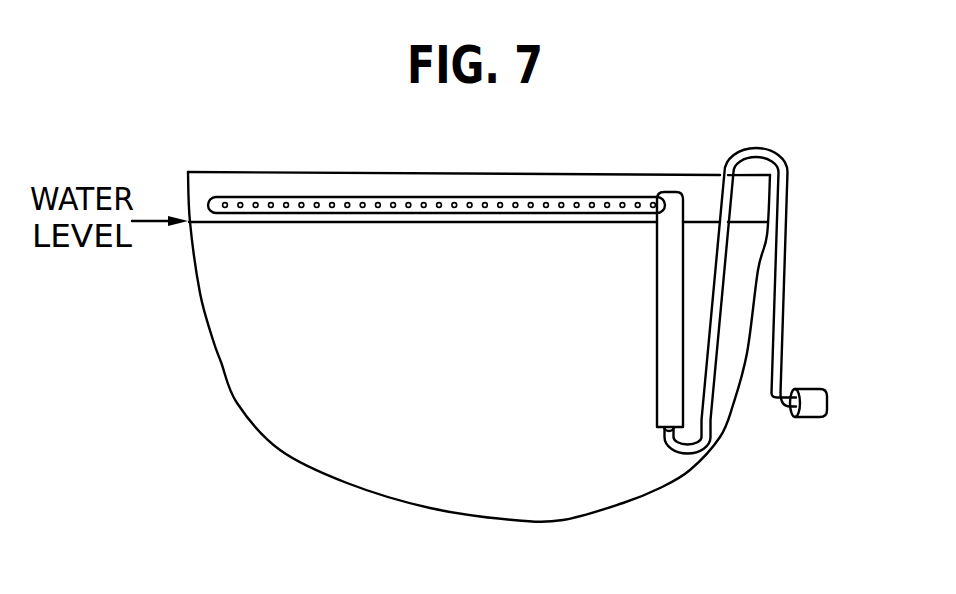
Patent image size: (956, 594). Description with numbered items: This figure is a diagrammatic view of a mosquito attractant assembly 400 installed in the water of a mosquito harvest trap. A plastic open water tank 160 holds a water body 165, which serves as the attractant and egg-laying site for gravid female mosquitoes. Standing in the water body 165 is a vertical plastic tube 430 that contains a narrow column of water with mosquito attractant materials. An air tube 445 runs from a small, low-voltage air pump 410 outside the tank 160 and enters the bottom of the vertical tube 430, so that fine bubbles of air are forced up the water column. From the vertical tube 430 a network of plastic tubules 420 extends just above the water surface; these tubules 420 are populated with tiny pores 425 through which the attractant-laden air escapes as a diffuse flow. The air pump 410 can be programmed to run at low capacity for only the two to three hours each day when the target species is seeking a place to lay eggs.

The water tank 160 is at (213, 347).
The water body 165 is at (428, 472).
The mosquito attractant assembly 400 is at (648, 152).
The plastic tubules 420 is at (336, 175).
The pores 425 is at (255, 201).
The vertical plastic tube 430 is at (662, 308).
The air tube 445 is at (787, 163).
The air pump 410 is at (813, 407).